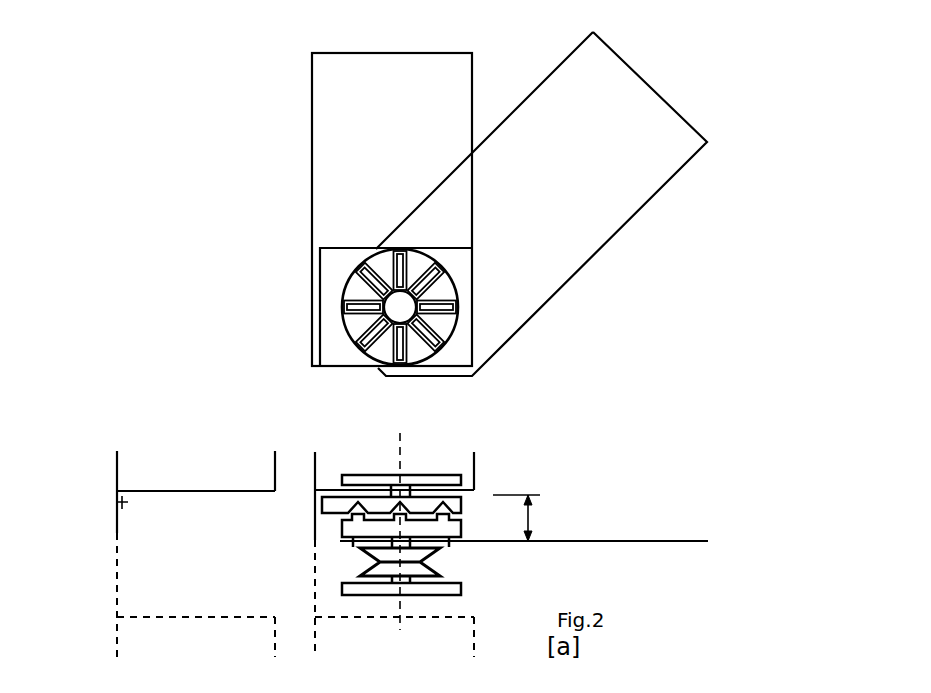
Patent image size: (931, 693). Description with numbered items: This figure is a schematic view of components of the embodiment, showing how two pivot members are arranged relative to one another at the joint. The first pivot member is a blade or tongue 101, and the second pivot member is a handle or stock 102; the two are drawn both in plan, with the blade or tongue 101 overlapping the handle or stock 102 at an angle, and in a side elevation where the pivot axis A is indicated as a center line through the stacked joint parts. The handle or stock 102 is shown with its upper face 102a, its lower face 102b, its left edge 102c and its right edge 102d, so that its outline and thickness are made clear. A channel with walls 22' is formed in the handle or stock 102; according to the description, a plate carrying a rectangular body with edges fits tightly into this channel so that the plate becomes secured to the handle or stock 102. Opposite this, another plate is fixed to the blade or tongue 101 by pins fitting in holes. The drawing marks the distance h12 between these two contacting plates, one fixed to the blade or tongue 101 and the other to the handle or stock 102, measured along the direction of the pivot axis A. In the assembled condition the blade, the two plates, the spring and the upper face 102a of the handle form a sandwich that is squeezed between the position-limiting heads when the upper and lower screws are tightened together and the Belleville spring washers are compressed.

The pivot member such as blade or tongue 101 is at (580, 68).
The pivot member such as handle or stock 102 is at (349, 70).
The upper face of stock or handle 102a is at (170, 490).
The lower face of stock or handle 102b is at (168, 618).
The left edge of stock or handle 102c is at (117, 533).
The right edge of stock or handle 102d is at (273, 465).
The joining structure such as a groove 22' is at (145, 513).
The distance between contacting elements 1 and 2 h12 is at (532, 518).
The pivot axis A is at (400, 441).